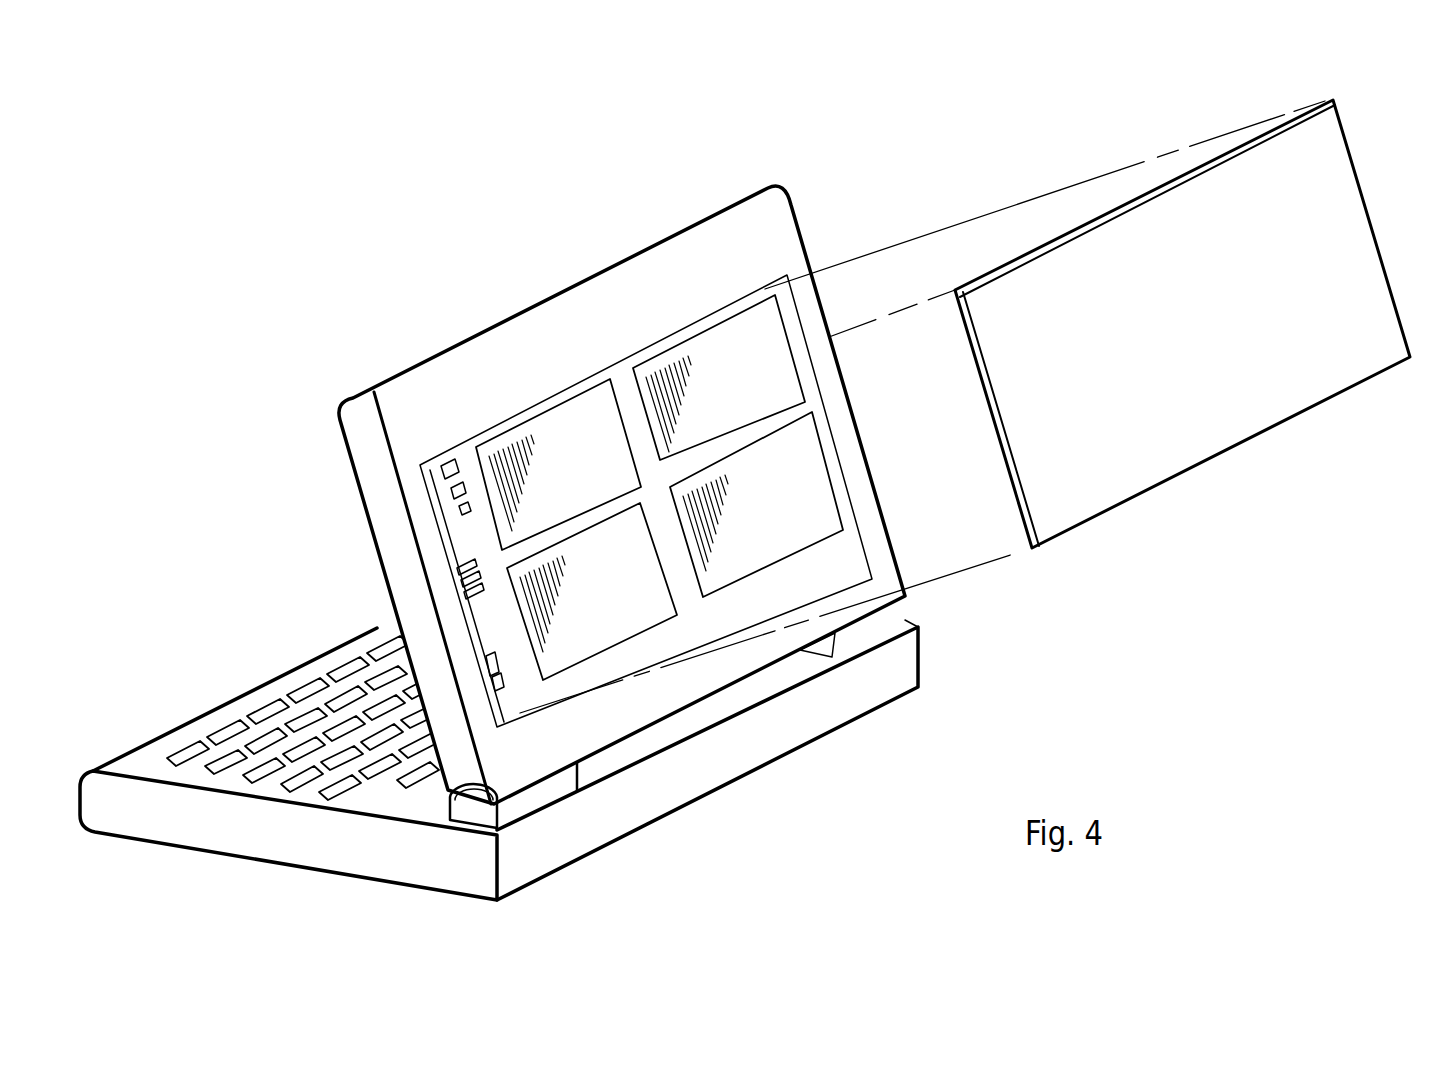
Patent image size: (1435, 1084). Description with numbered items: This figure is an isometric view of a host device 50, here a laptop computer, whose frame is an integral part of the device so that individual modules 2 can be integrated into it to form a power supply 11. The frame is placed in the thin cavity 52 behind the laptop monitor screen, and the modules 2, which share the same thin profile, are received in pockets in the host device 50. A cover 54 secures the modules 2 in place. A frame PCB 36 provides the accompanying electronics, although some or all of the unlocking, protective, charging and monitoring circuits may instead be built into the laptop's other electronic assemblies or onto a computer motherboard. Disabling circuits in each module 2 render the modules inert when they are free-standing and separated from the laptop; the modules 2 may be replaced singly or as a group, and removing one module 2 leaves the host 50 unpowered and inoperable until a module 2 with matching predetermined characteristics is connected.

The power supply 11 is at (690, 309).
The module 2 is at (573, 413).
The frame PCB 36 is at (446, 460).
The thin cavity 52 is at (835, 437).
The cover 54 is at (1148, 493).
The host device 50 is at (702, 802).